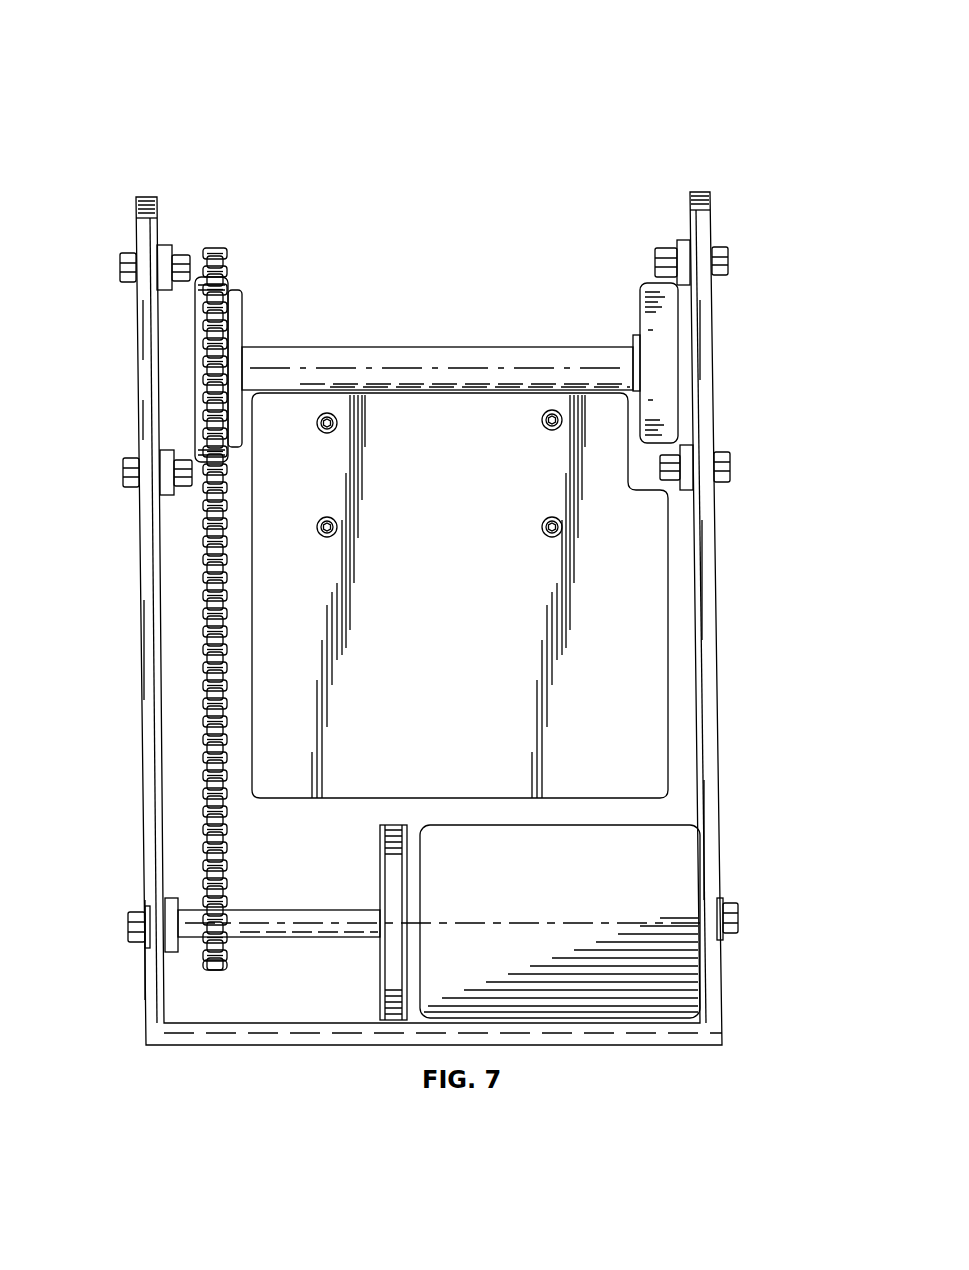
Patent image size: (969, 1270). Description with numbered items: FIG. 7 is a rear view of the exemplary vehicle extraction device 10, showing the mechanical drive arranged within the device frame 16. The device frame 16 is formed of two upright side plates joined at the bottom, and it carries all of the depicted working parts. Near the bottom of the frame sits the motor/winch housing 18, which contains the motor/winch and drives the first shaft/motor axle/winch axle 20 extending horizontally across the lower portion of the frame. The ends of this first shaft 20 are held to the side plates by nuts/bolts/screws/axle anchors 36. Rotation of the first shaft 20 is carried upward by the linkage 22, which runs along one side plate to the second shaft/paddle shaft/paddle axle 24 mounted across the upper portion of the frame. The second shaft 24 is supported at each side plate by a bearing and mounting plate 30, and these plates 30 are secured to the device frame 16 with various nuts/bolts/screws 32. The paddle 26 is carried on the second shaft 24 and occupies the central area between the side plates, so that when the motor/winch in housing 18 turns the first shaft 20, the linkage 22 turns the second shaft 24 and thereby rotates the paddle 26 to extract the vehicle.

The vehicle extraction device 10 is at (465, 166).
The device frame 16 is at (705, 337).
The motor/winch housing 18 is at (580, 965).
The first shaft/motor axle/winch axle 20 is at (300, 938).
The linkage 22 is at (212, 255).
The second shaft/paddle shaft/paddle axle 24 is at (375, 360).
The paddle 26 is at (475, 450).
The bearing and mounting plate 30 is at (172, 362).
The nuts/bolts/screws 32 is at (122, 266).
The nuts/bolts/screws/axle anchors 36 is at (137, 924).